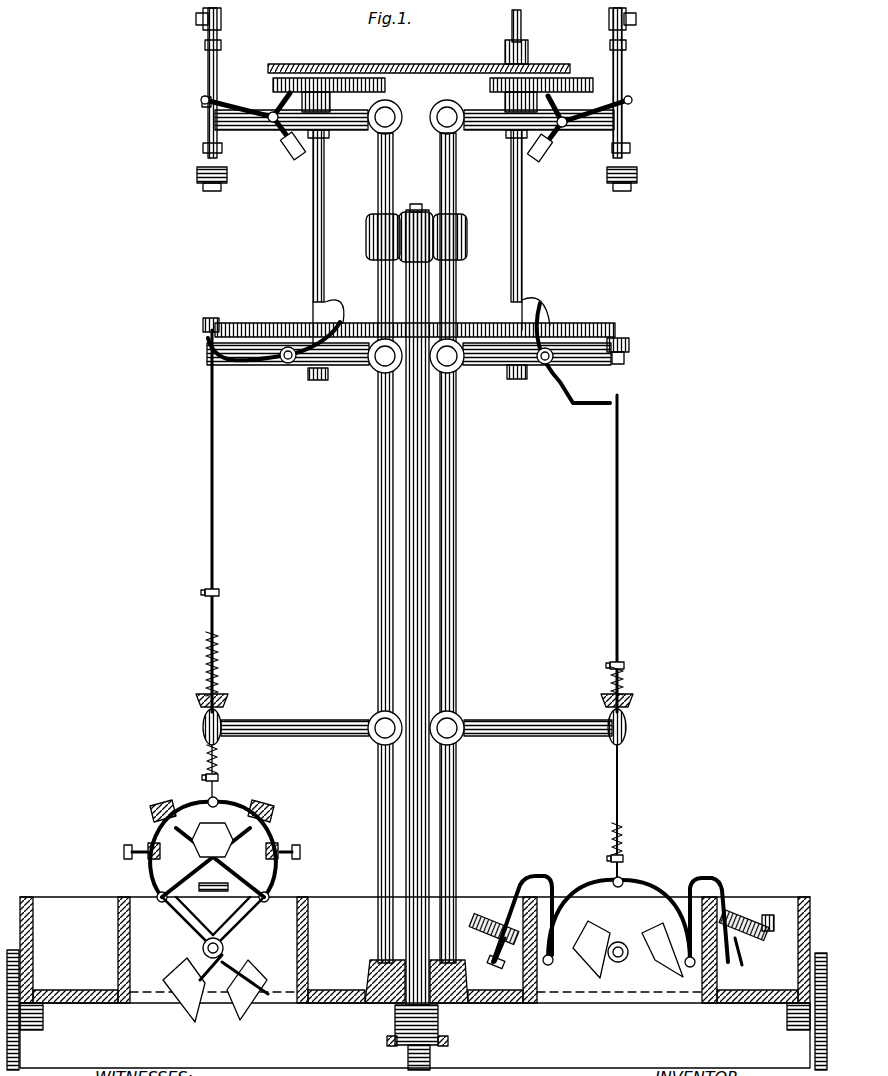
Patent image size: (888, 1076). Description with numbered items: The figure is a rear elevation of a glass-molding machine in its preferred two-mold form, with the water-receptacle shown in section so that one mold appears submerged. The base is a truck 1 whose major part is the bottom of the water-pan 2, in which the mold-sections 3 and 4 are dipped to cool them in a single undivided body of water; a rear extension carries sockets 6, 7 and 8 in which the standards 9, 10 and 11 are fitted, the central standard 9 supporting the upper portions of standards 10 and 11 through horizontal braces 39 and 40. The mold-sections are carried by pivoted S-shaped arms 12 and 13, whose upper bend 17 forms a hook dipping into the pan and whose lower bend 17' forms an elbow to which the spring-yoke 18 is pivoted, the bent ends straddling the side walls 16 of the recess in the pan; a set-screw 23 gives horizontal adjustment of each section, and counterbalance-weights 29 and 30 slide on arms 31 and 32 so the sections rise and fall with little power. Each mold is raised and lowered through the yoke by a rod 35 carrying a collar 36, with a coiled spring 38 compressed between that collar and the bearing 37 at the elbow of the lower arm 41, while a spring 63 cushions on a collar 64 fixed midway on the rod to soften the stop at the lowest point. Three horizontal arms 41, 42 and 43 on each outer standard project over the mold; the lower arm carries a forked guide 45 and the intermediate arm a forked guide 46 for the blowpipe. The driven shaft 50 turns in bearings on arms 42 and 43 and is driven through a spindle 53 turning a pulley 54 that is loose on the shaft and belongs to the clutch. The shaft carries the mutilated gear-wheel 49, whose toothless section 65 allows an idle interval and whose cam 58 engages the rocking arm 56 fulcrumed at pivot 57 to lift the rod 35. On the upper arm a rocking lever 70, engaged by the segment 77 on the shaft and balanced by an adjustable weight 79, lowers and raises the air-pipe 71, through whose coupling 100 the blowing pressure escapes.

The truck 1 is at (80, 1029).
The water-pan 2 is at (415, 950).
The mold-section 3 is at (486, 905).
The mold-section 4 is at (762, 884).
The socket 6 is at (434, 973).
The socket 7 is at (372, 976).
The socket 8 is at (468, 976).
The standard 9 is at (468, 606).
The standard 10 is at (349, 657).
The standard 11 is at (457, 186).
The arm 12 is at (180, 913).
The arm 13 is at (248, 924).
The side wall 16 is at (118, 915).
The upper bend 17 is at (213, 854).
The lower bend 17' is at (213, 922).
The spring-yoke 18 is at (152, 876).
The set-screw 23 is at (413, 912).
The counterbalance-weight 29 is at (386, 962).
The counterbalance-weight 30 is at (455, 961).
The arm 31 is at (185, 1012).
The arm 32 is at (268, 994).
The rod 35 is at (213, 535).
The collar 36 is at (219, 778).
The bearing 37 is at (222, 735).
The coiled spring 38 is at (208, 762).
The horizontal brace 39 is at (392, 240).
The horizontal brace 40 is at (468, 250).
The lower arm 41 is at (322, 737).
The intermediate arm 42 is at (360, 366).
The upper arm 43 is at (345, 131).
The forked guide 45 is at (229, 699).
The forked guide 46 is at (203, 338).
The mutilated gear-wheel 49 is at (360, 332).
The driven shaft 50 is at (313, 222).
The spindle 53 is at (521, 22).
The pulley 54 is at (286, 64).
The rocking arm 56 is at (250, 366).
The pivot 57 is at (286, 364).
The cam 58 is at (288, 333).
The spring 63 is at (219, 654).
The stop or collar 64 is at (219, 592).
The mutilated section 65 is at (254, 333).
The rocking lever 70 is at (240, 110).
The air-pipe 71 is at (217, 68).
The segment 77 is at (358, 79).
The weight 79 is at (292, 158).
The coupling 100 is at (436, 178).